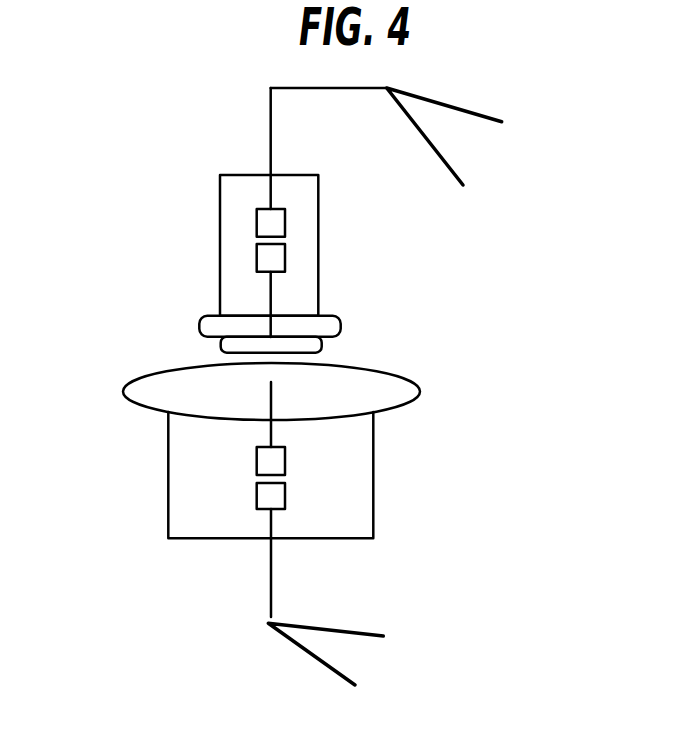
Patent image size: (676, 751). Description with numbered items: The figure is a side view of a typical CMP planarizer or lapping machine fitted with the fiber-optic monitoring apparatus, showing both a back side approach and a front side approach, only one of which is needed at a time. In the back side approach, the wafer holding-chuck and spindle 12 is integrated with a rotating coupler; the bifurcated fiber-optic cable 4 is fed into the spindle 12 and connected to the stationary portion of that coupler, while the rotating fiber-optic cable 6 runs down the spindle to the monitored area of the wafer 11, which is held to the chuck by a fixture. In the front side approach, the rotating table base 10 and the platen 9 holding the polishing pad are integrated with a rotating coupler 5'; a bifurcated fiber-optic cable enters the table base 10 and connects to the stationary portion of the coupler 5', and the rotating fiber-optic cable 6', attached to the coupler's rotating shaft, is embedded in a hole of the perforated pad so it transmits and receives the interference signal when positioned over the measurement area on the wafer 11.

The bifurcated fiber-optic cable 4 is at (443, 97).
The rotating coupler 5' is at (345, 359).
The rotating fiber-optic cable 6 is at (349, 212).
The rotating fiber-optic cable 6' is at (371, 498).
The platen 9 is at (123, 390).
The rotating table base 10 is at (168, 485).
The wafer 11 is at (220, 343).
The wafer holding-chuck and spindle 12 is at (190, 325).